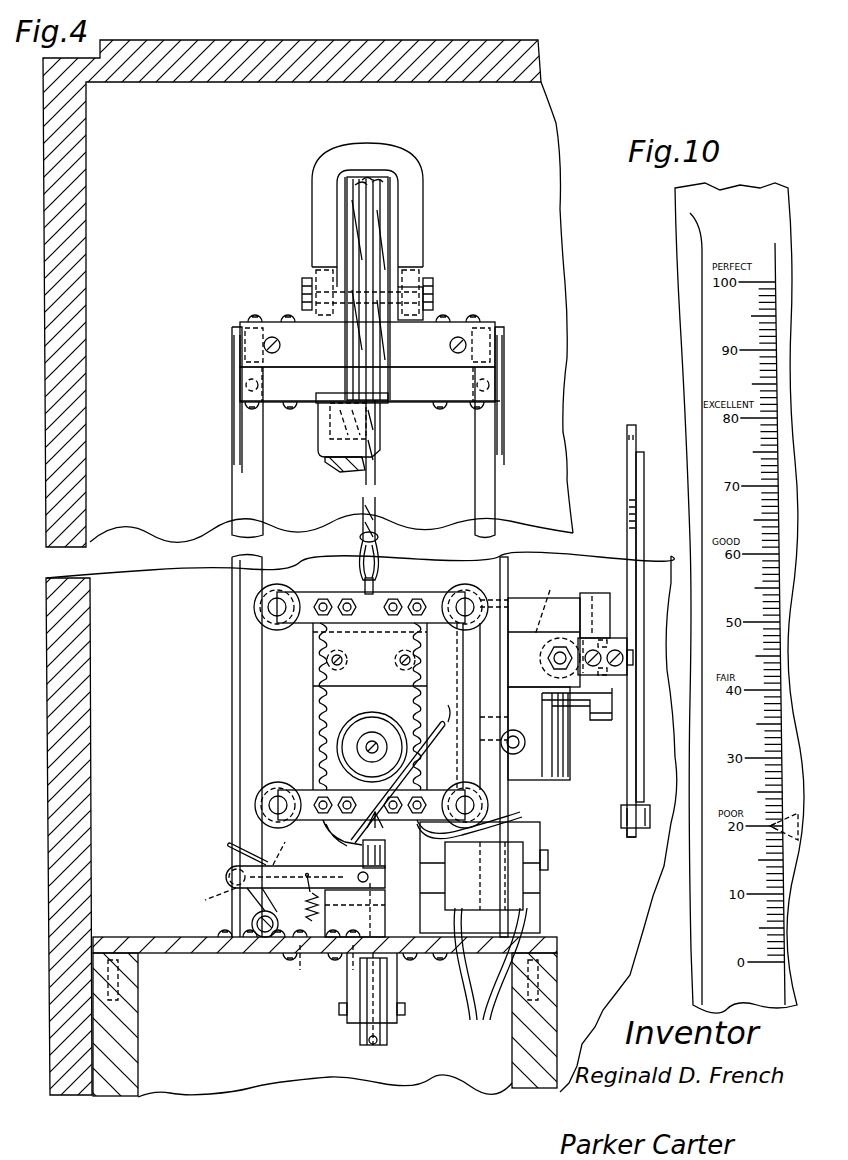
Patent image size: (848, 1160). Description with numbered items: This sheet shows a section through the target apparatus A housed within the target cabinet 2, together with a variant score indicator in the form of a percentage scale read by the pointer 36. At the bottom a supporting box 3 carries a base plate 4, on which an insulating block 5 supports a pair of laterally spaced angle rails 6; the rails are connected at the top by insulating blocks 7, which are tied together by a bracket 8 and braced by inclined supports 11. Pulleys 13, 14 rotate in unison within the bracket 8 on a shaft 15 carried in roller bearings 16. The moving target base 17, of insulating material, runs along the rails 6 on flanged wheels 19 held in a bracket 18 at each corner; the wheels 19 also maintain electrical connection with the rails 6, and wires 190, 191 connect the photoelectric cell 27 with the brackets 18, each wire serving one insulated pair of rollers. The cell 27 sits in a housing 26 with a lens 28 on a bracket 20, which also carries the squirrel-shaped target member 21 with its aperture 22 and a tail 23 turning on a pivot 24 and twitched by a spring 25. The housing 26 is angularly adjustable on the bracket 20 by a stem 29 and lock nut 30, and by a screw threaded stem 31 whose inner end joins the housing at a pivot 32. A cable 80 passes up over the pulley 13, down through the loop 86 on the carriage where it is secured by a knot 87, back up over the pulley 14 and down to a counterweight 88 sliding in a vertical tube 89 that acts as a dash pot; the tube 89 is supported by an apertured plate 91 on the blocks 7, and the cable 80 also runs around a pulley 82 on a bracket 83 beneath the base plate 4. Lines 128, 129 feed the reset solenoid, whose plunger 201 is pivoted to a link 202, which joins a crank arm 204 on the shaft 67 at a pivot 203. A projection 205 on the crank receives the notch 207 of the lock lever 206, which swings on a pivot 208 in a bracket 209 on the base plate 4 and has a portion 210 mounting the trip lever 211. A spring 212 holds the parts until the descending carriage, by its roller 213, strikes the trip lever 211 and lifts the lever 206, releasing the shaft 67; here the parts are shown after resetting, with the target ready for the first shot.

In FIG. 4, the apparatus A is at (553, 65).
In FIG. 4, the target cabinet 2 is at (538, 120).
In FIG. 4, the supporting box 3 is at (130, 1035).
In FIG. 4, the base plate 4 is at (190, 955).
In FIG. 4, the insulating block 5 is at (400, 860).
In FIG. 4, the rails 6 is at (492, 487).
In FIG. 4, the insulating blocks 7 is at (248, 397).
In FIG. 4, the bracket 8 is at (413, 173).
In FIG. 4, the inclined supports 11 is at (234, 433).
In FIG. 4, the pulley 13 is at (385, 213).
In FIG. 4, the pulley 14 is at (345, 209).
In FIG. 4, the shaft 15 is at (412, 262).
In FIG. 4, the roller bearings 16 is at (315, 265).
In FIG. 4, the moving target base 17 is at (318, 712).
In FIG. 4, the bracket 18 is at (297, 590).
In FIG. 4, the wheel 19 is at (278, 585).
In FIG. 4, the bracket 20 is at (518, 640).
In FIG. 4, the target member 21 is at (637, 440).
In FIG. 4, the aperture 22 is at (636, 626).
In FIG. 4, the tail 23 is at (644, 482).
In FIG. 4, the pivot 24 is at (650, 815).
In FIG. 4, the spring 25 is at (627, 793).
In FIG. 4, the housing 26 is at (578, 722).
In FIG. 4, the photoelectric cell 27 is at (550, 600).
In FIG. 4, the lens 28 is at (612, 632).
In FIG. 4, the stem 29 is at (550, 658).
In FIG. 4, the lock nut 30 is at (556, 662).
In FIG. 4, the screw threaded stem 31 is at (448, 705).
In FIG. 4, the pivot 32 is at (525, 742).
In FIG. 4, the pointer 36 is at (583, 620).
In FIG. 10, the pointer 36 is at (785, 822).
In FIG. 4, the shaft 67 is at (264, 937).
In FIG. 4, the cable 80 is at (368, 195).
In FIG. 4, the pulley 82 is at (360, 1042).
In FIG. 4, the brackets 83 is at (347, 993).
In FIG. 4, the loop 86 is at (388, 580).
In FIG. 4, the knot 87 is at (378, 538).
In FIG. 4, the counterweight 88 is at (333, 465).
In FIG. 4, the vertical tube 89 is at (320, 440).
In FIG. 4, the plate 91 is at (428, 405).
In FIG. 4, the line 128 is at (470, 1008).
In FIG. 4, the line 129 is at (495, 1022).
In FIG. 4, the wire 190 is at (415, 672).
In FIG. 4, the wire 191 is at (340, 845).
In FIG. 4, the solenoid plunger 201 is at (408, 878).
In FIG. 4, the link 202 is at (308, 888).
In FIG. 4, the pivot 203 is at (229, 876).
In FIG. 4, the crank arm 204 is at (248, 898).
In FIG. 4, the projection 205 is at (240, 893).
In FIG. 4, the lock lever 206 is at (230, 843).
In FIG. 4, the notch 207 is at (286, 844).
In FIG. 4, the pivot 208 is at (365, 905).
In FIG. 4, the bracket 209 is at (355, 915).
In FIG. 4, the portion 210 is at (360, 852).
In FIG. 4, the trip lever 211 is at (447, 728).
In FIG. 4, the spring 212 is at (310, 915).
In FIG. 4, the roller 213 is at (345, 743).